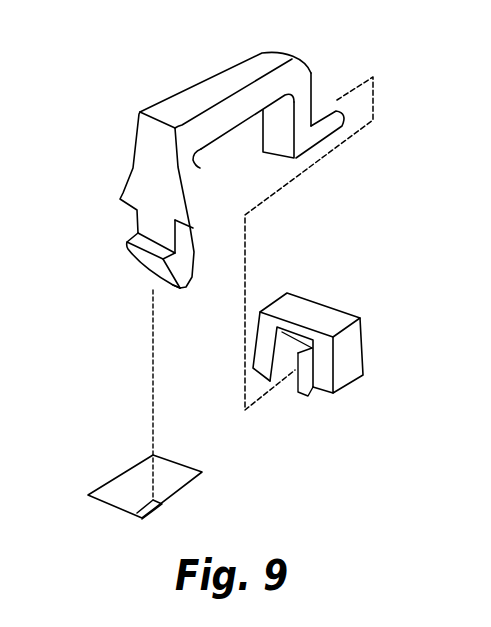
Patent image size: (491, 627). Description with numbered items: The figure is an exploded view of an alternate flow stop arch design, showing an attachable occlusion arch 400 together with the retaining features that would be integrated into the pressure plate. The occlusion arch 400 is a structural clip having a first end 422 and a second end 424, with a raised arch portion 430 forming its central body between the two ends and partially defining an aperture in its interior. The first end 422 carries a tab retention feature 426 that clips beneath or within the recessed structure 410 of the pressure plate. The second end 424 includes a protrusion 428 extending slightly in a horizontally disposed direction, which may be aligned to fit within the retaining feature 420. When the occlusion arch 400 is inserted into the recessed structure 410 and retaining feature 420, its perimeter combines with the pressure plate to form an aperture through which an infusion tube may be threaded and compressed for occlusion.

The occlusion arch 400 is at (219, 158).
The raised arch portion 430 is at (250, 100).
The first end 422 is at (113, 207).
The second end 424 is at (328, 70).
The tab retention feature 426 is at (145, 265).
The protrusion 428 is at (374, 120).
The retaining feature 420 is at (330, 312).
The recessed structure 410 is at (135, 457).